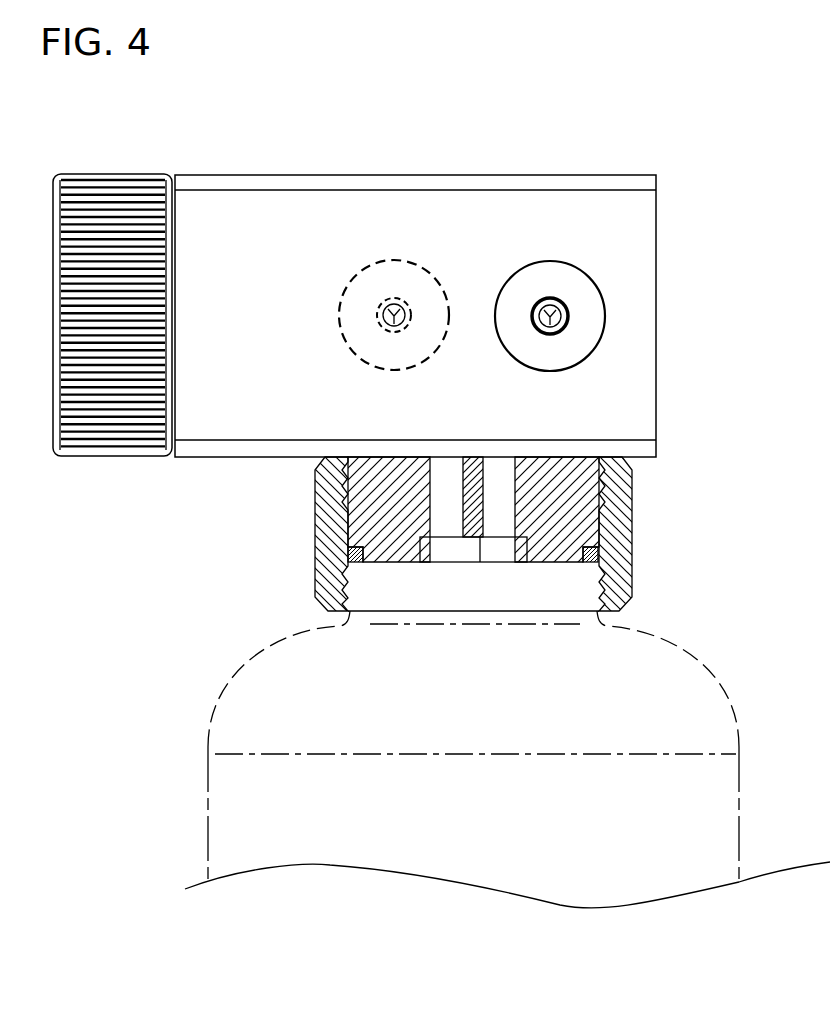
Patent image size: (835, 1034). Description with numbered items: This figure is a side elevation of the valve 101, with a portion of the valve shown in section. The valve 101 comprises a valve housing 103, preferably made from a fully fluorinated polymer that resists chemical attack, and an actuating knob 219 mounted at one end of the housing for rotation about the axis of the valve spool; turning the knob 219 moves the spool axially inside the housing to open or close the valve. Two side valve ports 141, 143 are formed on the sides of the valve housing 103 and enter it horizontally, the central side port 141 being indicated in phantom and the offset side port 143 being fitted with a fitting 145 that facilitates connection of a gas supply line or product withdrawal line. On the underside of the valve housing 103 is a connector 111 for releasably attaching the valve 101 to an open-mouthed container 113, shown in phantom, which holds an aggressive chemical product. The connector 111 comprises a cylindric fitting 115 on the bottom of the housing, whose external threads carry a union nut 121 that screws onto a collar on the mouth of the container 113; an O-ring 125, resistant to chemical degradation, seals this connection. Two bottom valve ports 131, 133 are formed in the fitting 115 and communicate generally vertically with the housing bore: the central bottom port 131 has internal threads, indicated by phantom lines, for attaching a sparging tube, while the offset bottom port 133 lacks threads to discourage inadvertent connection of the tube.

The valve 101 is at (645, 124).
The valve housing 103 is at (473, 203).
The connector 111 is at (647, 542).
The open-mouthed container 113 is at (207, 780).
The cylindric fitting 115 is at (570, 470).
The union nut 121 is at (325, 484).
The O-ring 125 is at (352, 550).
The central bottom port 131 is at (457, 500).
The offset bottom port 133 is at (507, 500).
The central side port 141 is at (394, 305).
The offset side port 143 is at (553, 303).
The fitting 145 is at (593, 316).
The actuating knob 219 is at (96, 173).